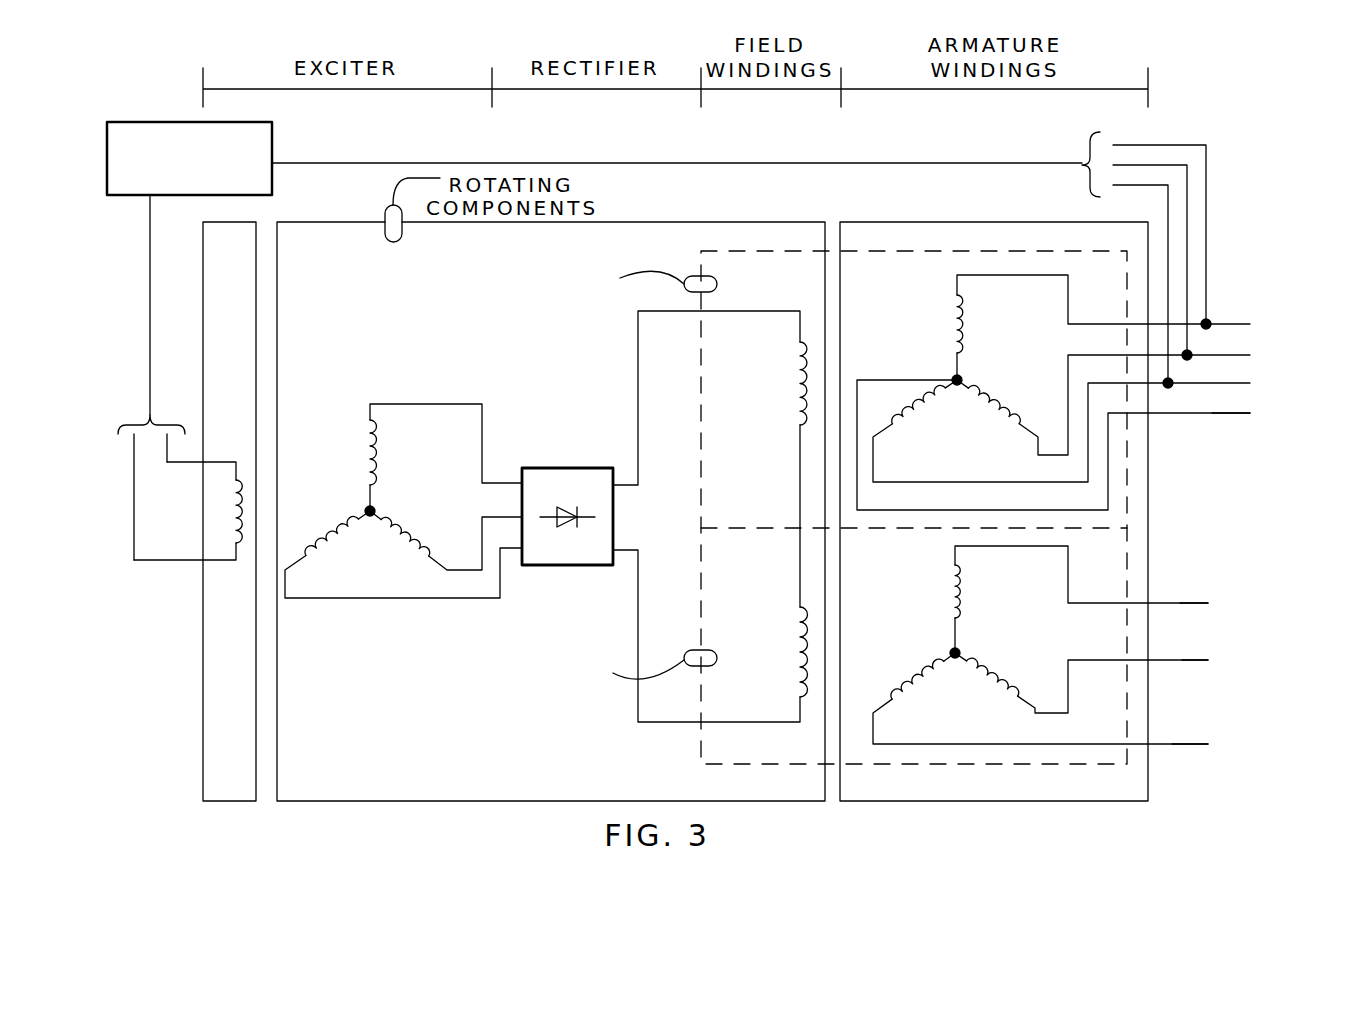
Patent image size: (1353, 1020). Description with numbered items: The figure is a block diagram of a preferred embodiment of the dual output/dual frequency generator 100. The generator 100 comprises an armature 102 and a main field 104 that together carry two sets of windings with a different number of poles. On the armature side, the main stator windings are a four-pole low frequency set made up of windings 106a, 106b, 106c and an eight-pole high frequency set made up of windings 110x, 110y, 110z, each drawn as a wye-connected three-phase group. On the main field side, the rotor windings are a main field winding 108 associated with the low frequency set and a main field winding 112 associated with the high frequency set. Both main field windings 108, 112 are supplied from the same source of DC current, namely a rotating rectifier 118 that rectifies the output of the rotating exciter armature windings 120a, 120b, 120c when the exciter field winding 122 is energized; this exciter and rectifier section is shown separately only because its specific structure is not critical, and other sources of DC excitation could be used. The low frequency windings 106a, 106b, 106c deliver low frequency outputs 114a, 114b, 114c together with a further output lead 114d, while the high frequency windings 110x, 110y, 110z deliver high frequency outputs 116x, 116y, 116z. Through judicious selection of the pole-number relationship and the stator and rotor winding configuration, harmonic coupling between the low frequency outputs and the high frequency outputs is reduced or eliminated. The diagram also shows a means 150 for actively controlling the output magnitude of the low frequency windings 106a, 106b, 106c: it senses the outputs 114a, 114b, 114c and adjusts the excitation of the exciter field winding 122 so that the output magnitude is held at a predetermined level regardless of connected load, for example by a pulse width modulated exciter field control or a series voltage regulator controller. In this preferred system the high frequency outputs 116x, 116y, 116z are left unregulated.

The dual output/dual frequency generator 100 is at (840, 197).
The armature 102 is at (938, 765).
The main field 104 is at (738, 765).
The low frequency winding 106a is at (957, 340).
The low frequency winding 106b is at (1005, 405).
The low frequency winding 106c is at (916, 410).
The main field winding 108 is at (805, 405).
The high frequency winding 110x is at (955, 612).
The high frequency winding 110y is at (1005, 685).
The high frequency winding 110z is at (918, 683).
The main field winding 112 is at (800, 630).
The low frequency output 114a is at (1222, 322).
The low frequency output 114b is at (1233, 355).
The low frequency output 114c is at (1233, 385).
The low frequency output 114d is at (1212, 413).
The high frequency output 116x is at (1180, 603).
The high frequency output 116y is at (1182, 662).
The high frequency output 116z is at (1172, 746).
The rotating rectifier 118 is at (561, 468).
The exciter armature winding 120a is at (425, 533).
The exciter armature winding 120b is at (318, 548).
The exciter armature winding 120c is at (368, 440).
The exciter field winding 122 is at (243, 485).
The means for actively controlling output magnitude 150 is at (268, 199).